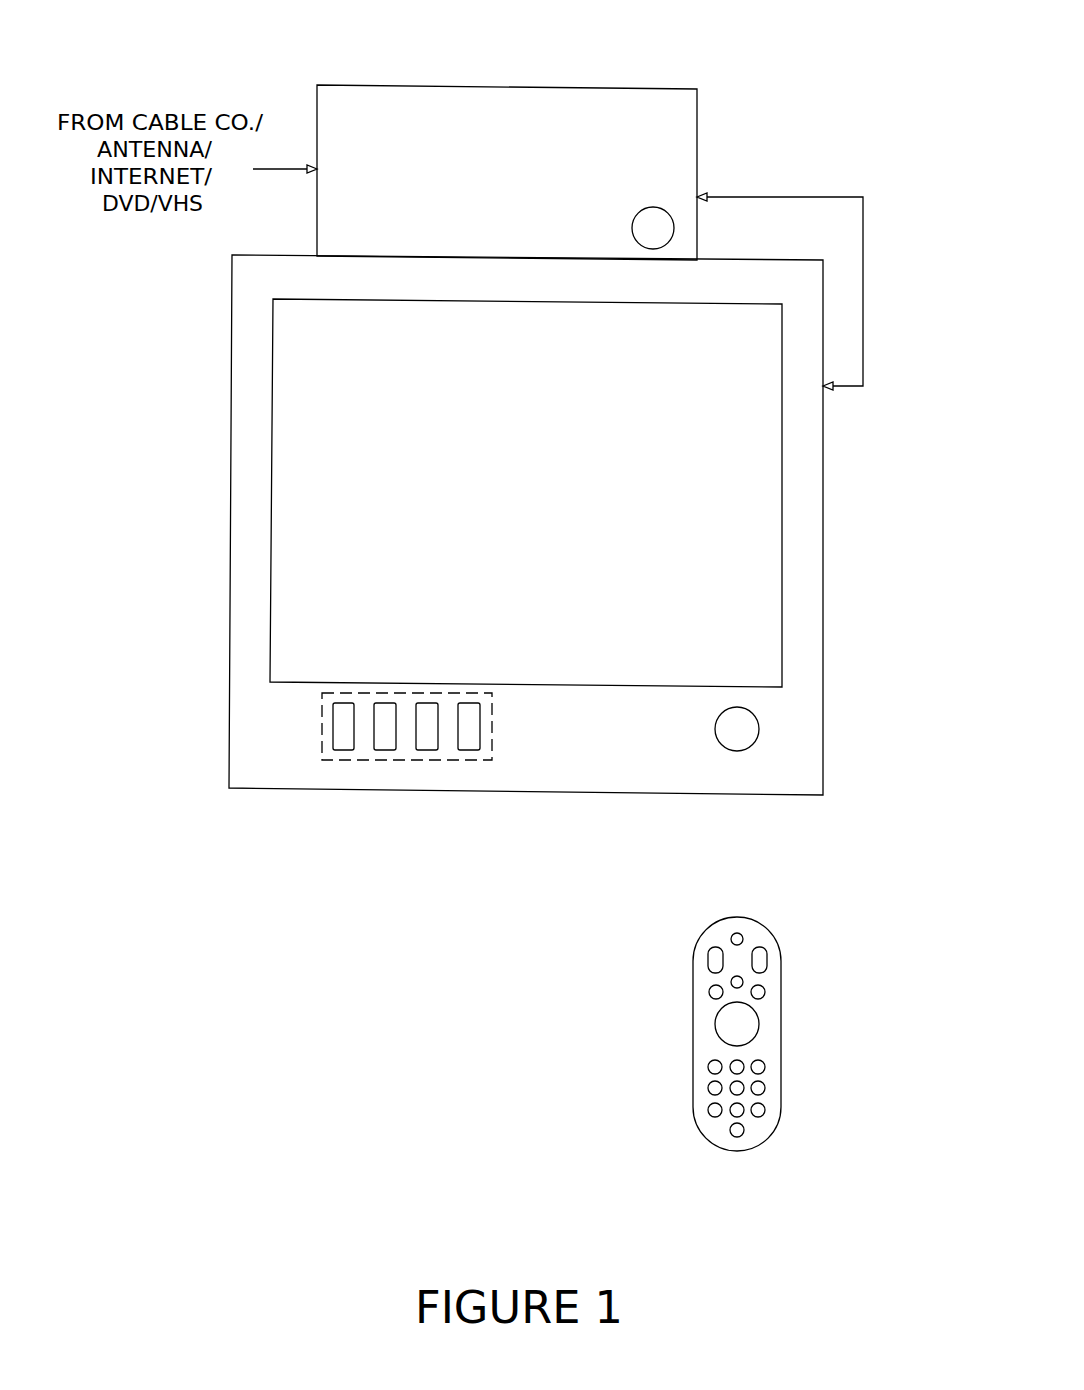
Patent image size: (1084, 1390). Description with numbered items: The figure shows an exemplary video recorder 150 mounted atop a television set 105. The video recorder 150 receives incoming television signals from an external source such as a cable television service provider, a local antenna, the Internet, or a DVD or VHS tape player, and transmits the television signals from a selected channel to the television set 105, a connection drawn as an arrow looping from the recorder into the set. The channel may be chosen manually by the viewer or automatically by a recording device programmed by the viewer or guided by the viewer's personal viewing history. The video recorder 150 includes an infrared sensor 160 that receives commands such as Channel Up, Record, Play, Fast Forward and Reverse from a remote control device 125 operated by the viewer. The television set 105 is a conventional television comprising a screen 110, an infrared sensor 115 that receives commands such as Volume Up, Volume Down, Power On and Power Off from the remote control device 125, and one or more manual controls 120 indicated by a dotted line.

The television set 105 is at (833, 468).
The screen 110 is at (792, 572).
The infrared (IR) sensor 115 is at (737, 761).
The manual controls 120 is at (394, 769).
The remote control device 125 is at (791, 1035).
The video recorder 150 is at (337, 75).
The infrared (IR) sensor 160 is at (622, 228).